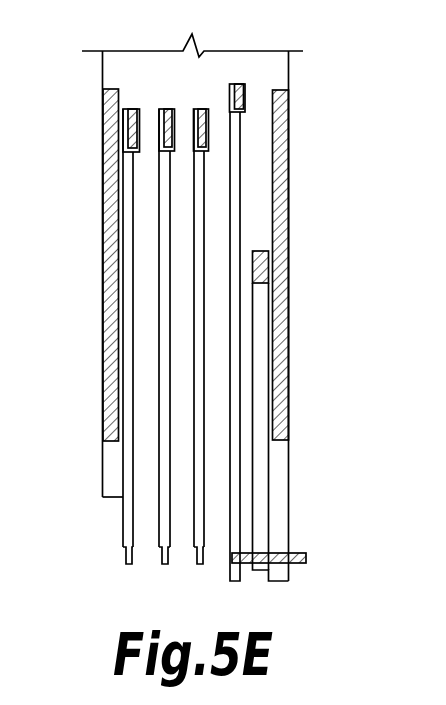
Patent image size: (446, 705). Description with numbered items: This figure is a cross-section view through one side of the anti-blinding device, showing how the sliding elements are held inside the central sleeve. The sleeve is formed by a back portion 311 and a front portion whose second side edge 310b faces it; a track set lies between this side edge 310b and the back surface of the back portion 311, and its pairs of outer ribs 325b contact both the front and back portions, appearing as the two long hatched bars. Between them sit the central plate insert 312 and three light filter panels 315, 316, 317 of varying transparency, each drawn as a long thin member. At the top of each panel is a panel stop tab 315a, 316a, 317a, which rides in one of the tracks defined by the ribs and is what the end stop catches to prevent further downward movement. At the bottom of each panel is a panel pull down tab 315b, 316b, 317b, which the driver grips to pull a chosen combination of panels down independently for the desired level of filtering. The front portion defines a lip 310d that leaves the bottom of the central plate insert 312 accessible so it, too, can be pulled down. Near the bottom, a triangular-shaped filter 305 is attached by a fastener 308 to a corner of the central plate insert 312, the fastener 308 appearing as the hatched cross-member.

The triangular-shaped filter 305 is at (257, 479).
The fastener 308 is at (128, 497).
The second side edge 310b is at (102, 468).
The lip 310d is at (120, 498).
The back portion 311 is at (304, 532).
The central plate insert 312 is at (241, 368).
The light filter panel 315 is at (97, 335).
The panel stop tab 315a is at (133, 109).
The panel pull down tab 315b is at (127, 563).
The light filter panel 316 is at (117, 322).
The panel stop tab 316a is at (167, 109).
The panel pull down tab 316b is at (165, 566).
The light filter panel 317 is at (152, 324).
The panel stop tab 317a is at (204, 109).
The panel pull down tab 317b is at (200, 566).
The outer rib 325b is at (102, 103).